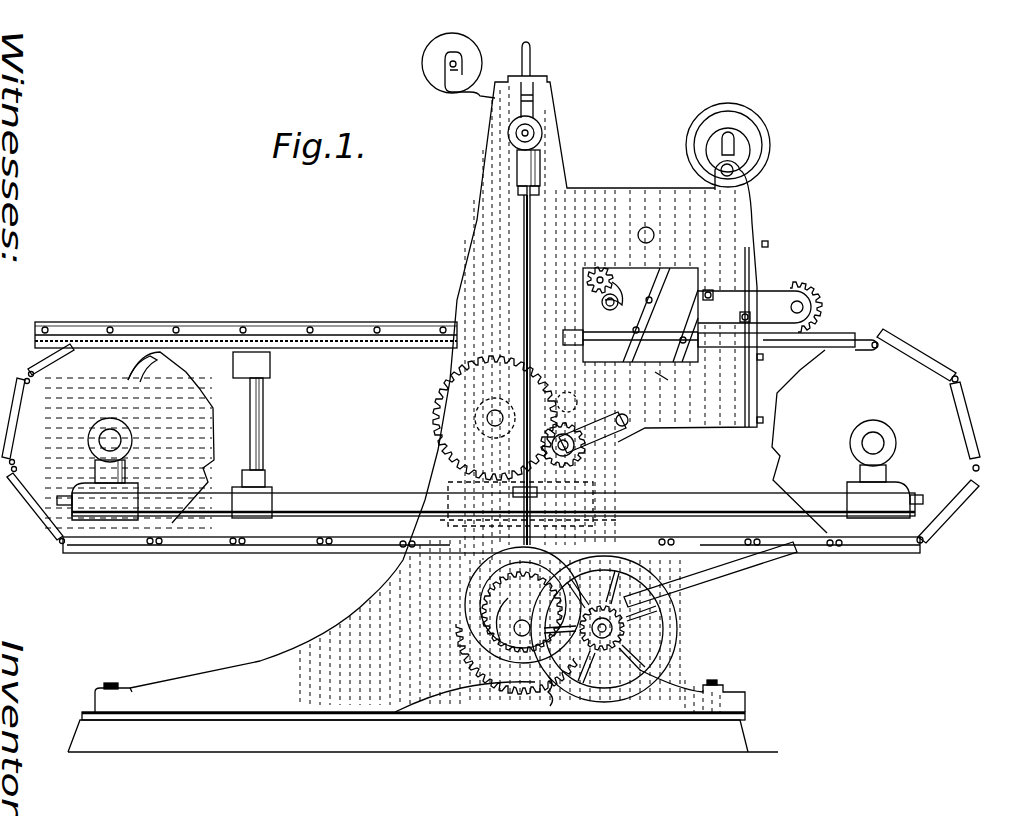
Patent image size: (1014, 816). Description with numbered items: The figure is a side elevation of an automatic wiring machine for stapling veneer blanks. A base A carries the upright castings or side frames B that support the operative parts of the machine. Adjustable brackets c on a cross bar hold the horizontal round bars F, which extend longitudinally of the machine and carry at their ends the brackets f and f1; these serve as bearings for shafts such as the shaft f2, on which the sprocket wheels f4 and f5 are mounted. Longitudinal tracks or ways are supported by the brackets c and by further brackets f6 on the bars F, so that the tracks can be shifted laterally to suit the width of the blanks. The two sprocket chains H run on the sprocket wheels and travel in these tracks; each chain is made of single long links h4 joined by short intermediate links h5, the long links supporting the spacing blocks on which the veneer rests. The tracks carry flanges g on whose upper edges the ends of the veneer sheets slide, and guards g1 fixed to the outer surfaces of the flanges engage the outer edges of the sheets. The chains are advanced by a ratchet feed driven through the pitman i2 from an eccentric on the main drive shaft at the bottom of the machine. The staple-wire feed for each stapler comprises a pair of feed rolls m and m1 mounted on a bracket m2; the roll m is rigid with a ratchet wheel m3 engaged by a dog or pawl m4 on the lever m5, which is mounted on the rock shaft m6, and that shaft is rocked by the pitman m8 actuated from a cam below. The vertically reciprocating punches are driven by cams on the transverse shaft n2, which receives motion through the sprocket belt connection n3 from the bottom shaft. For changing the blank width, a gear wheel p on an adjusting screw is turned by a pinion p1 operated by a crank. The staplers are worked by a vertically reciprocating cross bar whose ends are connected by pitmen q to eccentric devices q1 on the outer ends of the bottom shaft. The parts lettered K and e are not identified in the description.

The base A is at (262, 720).
The side frames B is at (392, 595).
The round bars F is at (334, 500).
The sprocket chains H is at (186, 553).
The hand wheel K is at (423, 62).
The adjustable brackets c is at (490, 365).
The fly wheel pawl e is at (604, 636).
The bracket f is at (128, 498).
The bracket f1 is at (880, 518).
The shaft f2 is at (112, 440).
The sprocket wheel f4 is at (205, 435).
The sprocket wheel f5 is at (948, 505).
The brackets f6 is at (262, 455).
The flanges g is at (163, 336).
The guards g1 is at (262, 335).
The long links h4 is at (250, 552).
The short links h5 is at (318, 538).
The pitman i2 is at (722, 572).
The feed roll m is at (600, 302).
The feed roll m1 is at (604, 313).
The bracket m2 is at (600, 296).
The ratchet wheel m3 is at (597, 272).
The dog or pawl m4 is at (655, 302).
The lever m5 is at (692, 270).
The rock shaft m6 is at (646, 227).
The pitman m8 is at (640, 321).
The transverse shaft n2 is at (733, 170).
The sprocket belt connection n3 is at (674, 384).
The gear wheel p is at (472, 400).
The pinion p1 is at (566, 432).
The pitman q is at (522, 245).
The eccentric devices q1 is at (500, 598).